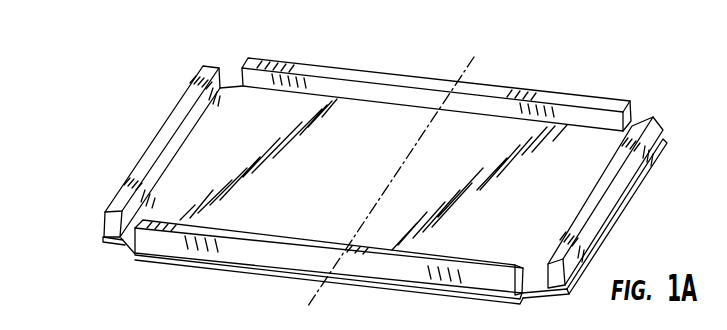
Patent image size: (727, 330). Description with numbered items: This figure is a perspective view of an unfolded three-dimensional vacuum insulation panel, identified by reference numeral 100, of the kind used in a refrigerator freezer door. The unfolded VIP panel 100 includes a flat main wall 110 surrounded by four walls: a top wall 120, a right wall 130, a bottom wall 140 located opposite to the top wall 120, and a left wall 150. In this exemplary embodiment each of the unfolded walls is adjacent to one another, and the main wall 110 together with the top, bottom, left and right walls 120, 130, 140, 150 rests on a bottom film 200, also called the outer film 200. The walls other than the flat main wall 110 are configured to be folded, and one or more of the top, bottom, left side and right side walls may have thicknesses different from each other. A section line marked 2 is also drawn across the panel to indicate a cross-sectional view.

The unfolded vacuum insulation panel 100 is at (147, 68).
The main wall 110 is at (353, 135).
The top wall 120 is at (567, 98).
The right wall 130 is at (623, 188).
The bottom wall 140 is at (357, 273).
The left wall 150 is at (157, 147).
The bottom film 200 is at (153, 258).
The section line 2- 2 is at (474, 57).